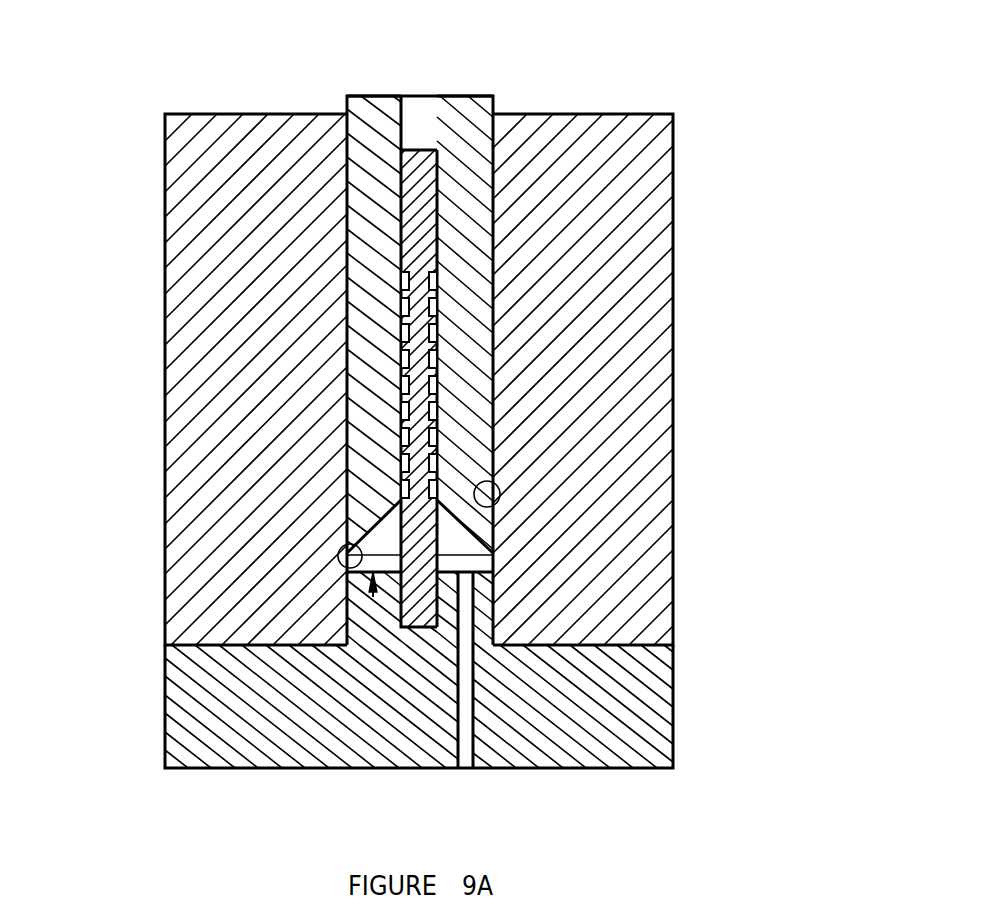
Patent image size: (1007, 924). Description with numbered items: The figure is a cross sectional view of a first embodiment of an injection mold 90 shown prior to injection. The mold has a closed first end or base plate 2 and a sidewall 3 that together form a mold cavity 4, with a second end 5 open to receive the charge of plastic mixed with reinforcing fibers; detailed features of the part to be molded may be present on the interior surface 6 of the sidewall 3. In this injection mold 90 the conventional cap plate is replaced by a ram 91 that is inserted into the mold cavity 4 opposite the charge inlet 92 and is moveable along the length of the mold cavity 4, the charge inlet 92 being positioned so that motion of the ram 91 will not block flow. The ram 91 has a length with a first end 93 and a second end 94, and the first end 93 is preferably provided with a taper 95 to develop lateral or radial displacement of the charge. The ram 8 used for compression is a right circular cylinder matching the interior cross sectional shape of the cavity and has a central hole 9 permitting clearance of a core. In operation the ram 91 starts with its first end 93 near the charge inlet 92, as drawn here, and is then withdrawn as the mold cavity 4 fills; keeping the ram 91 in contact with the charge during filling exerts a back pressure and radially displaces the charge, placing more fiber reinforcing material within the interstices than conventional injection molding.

The base plate 2 is at (673, 697).
The sidewall 3 is at (673, 430).
The mold cavity 4 is at (470, 563).
The second end 5 is at (500, 507).
The interior surface 6 is at (440, 255).
The ram 8 is at (410, 142).
The central hole 9 is at (440, 357).
The injection mold 90 is at (685, 103).
The ram 91 is at (345, 97).
The charge inlet 92 is at (458, 730).
The first end 93 is at (373, 597).
The second end 94 is at (508, 92).
The taper 95 is at (347, 570).